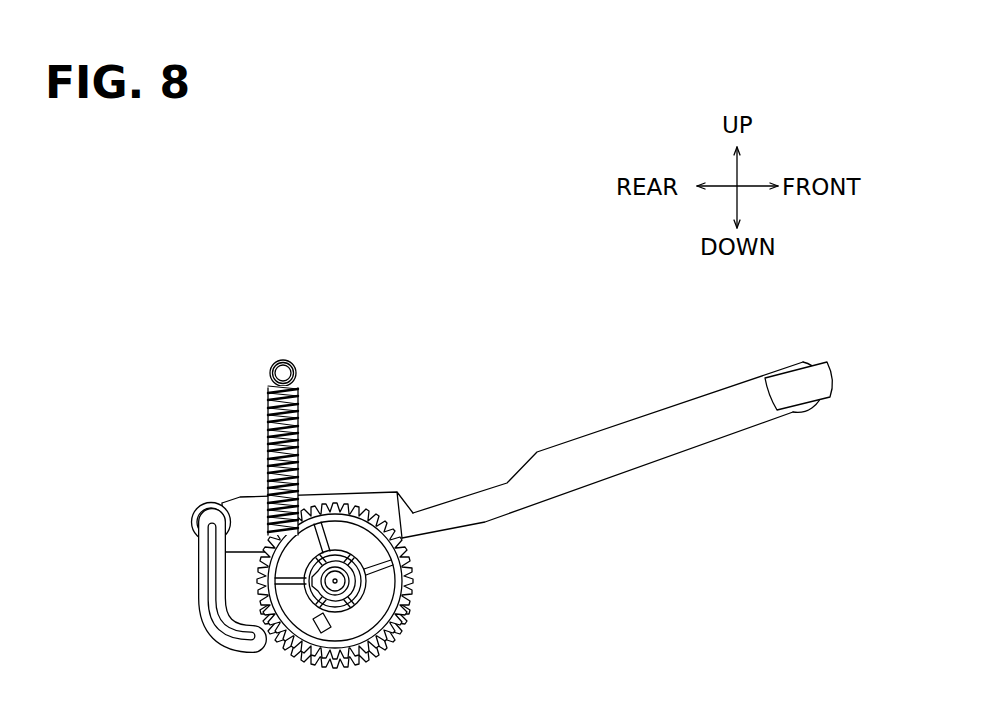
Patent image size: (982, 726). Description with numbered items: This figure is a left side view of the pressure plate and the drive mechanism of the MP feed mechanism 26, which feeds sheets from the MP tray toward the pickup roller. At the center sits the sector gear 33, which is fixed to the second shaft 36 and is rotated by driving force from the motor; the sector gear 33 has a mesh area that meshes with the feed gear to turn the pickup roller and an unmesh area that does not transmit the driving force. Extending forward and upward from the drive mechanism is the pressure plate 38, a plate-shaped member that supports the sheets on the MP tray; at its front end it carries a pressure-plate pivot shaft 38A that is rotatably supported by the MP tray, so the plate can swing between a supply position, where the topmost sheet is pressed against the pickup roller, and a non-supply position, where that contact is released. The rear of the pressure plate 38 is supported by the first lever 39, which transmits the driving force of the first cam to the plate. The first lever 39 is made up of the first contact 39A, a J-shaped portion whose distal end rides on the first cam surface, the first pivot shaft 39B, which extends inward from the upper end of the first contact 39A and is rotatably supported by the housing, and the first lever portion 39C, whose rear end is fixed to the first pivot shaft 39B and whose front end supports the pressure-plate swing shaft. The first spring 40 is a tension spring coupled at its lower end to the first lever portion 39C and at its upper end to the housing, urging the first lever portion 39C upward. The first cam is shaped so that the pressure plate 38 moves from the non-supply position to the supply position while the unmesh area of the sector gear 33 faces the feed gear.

The MP feed mechanism 26 is at (193, 366).
The sector gear 33 is at (372, 585).
The second shaft 36 is at (343, 582).
The pressure plate 38 is at (617, 419).
The pressure-plate pivot shaft 38A is at (789, 366).
The first lever 39 is at (181, 581).
The first contact 39A is at (208, 637).
The first pivot shaft 39B is at (204, 510).
The first lever portion 39C is at (237, 499).
The first spring 40 is at (297, 403).